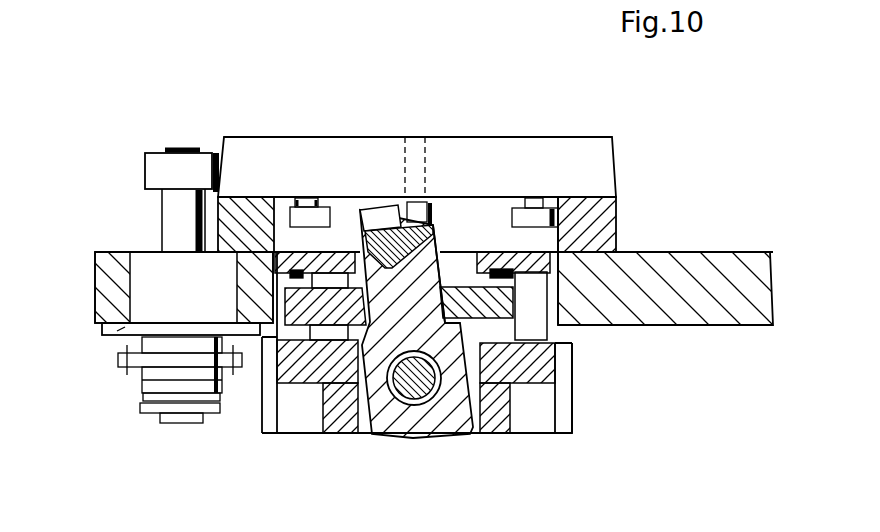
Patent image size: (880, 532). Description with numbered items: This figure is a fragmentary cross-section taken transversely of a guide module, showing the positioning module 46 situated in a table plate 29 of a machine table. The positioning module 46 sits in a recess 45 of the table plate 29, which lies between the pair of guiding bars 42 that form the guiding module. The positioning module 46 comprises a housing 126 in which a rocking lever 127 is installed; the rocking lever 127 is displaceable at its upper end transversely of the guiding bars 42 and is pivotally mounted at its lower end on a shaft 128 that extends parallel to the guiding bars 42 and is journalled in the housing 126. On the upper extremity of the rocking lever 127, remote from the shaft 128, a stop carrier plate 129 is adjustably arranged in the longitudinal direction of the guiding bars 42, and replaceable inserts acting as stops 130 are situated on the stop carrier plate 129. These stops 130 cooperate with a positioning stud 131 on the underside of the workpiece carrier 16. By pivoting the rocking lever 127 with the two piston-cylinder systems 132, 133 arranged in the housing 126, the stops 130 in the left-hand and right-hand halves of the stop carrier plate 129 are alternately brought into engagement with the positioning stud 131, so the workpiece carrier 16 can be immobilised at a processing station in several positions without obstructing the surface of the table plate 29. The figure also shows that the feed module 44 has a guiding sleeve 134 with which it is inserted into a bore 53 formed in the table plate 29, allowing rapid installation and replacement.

The workpiece carrier 16 is at (542, 138).
The feed module 44 is at (159, 141).
The guiding bar 42 is at (234, 217).
The stop 130 is at (367, 213).
The positioning stud 131 is at (391, 205).
The stop carrier plate 129 is at (442, 233).
The rocking lever 127 is at (450, 422).
The shaft 128 is at (405, 403).
The positioning module 46 is at (334, 444).
The piston-cylinder system 132 is at (325, 332).
The piston-cylinder system 133 is at (538, 347).
The recess 45 is at (555, 325).
The housing 126 is at (578, 430).
The table plate 29 is at (706, 252).
The bore 53 is at (135, 268).
The guiding sleeve 134 is at (107, 328).